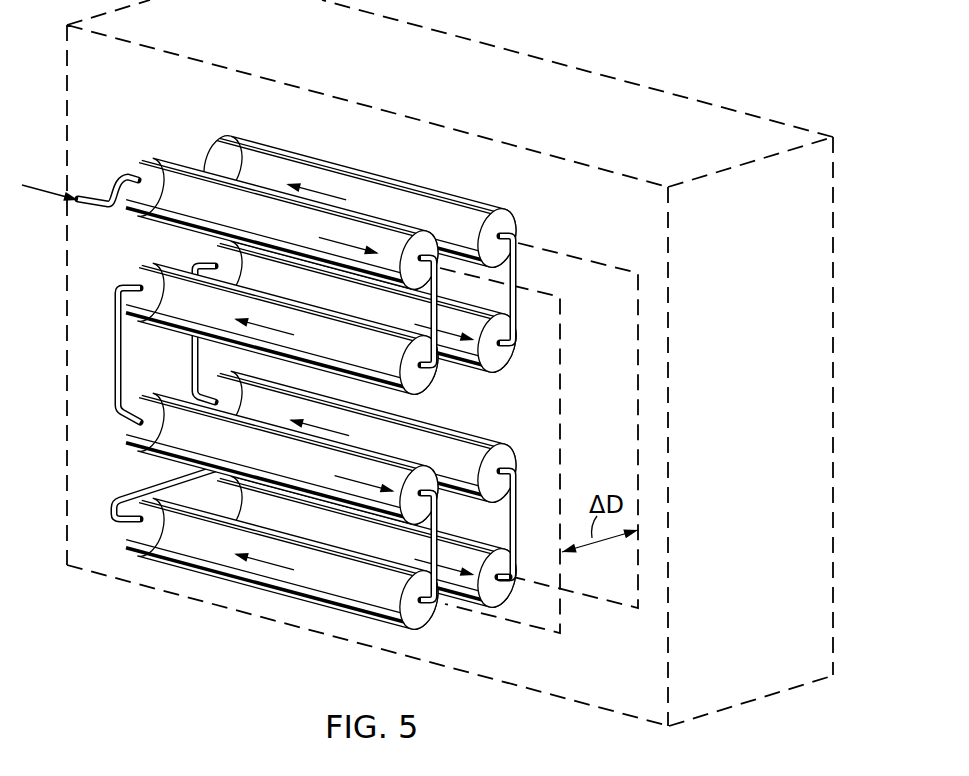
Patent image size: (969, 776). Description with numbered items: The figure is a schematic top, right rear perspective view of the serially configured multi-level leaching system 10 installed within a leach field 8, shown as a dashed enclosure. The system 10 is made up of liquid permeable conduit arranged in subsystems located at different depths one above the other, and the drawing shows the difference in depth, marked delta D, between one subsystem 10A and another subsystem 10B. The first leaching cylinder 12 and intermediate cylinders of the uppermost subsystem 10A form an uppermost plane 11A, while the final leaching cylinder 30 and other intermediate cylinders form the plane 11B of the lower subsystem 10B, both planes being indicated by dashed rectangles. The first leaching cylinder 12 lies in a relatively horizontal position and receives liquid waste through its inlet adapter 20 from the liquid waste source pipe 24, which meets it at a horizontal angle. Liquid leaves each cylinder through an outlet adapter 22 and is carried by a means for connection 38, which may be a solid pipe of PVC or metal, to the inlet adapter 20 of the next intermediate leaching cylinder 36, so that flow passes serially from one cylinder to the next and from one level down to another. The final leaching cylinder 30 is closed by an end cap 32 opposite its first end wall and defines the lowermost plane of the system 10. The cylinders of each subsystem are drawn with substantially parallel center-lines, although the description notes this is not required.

The leach bed 8 is at (600, 686).
The system 10 is at (451, 378).
The uppermost subsystem 10A is at (108, 414).
The other subsystem 10B is at (515, 447).
The uppermost plane 11A is at (562, 610).
The plane of the other subsystem 11B is at (641, 558).
The first leaching cylinder 12 is at (265, 225).
The inlet adapter 20 is at (135, 178).
The outlet adapter 22 is at (501, 584).
The liquid waste source pipe 24 is at (82, 202).
The final leaching cylinder 30 is at (359, 187).
The end cap 32 is at (212, 158).
The intermediate leaching cylinder 36 is at (350, 583).
The means for connection 38 is at (321, 378).